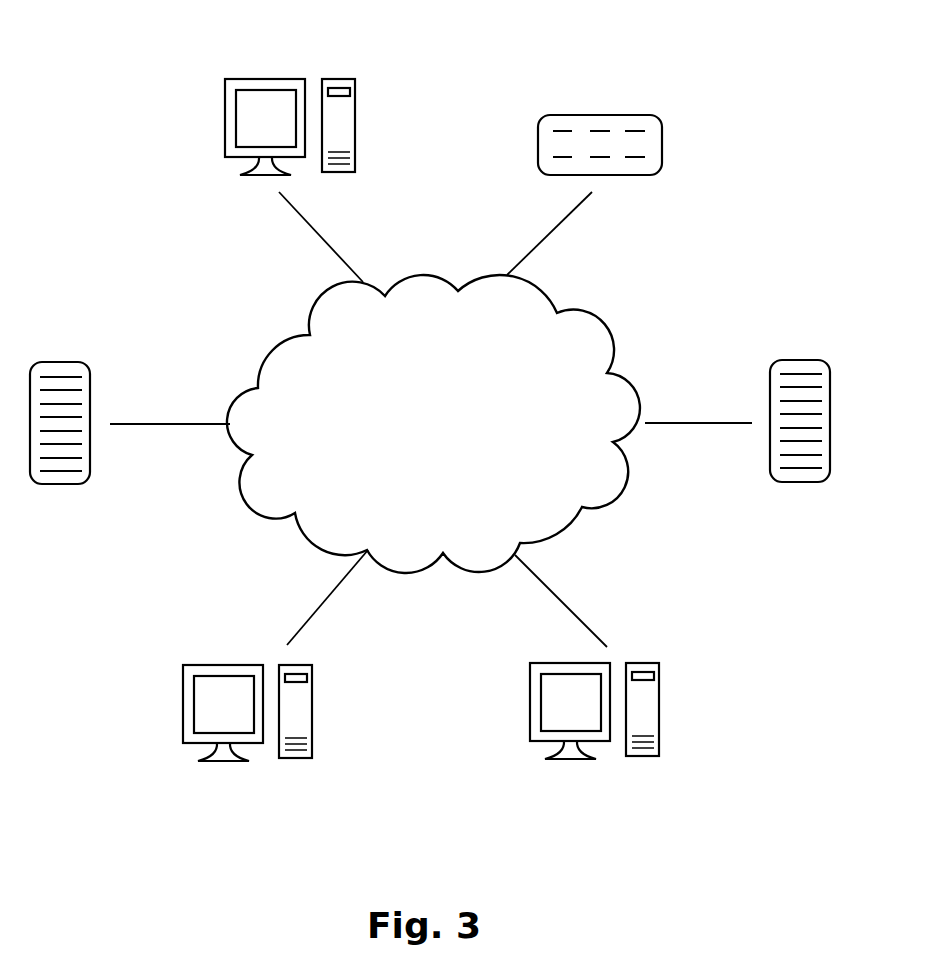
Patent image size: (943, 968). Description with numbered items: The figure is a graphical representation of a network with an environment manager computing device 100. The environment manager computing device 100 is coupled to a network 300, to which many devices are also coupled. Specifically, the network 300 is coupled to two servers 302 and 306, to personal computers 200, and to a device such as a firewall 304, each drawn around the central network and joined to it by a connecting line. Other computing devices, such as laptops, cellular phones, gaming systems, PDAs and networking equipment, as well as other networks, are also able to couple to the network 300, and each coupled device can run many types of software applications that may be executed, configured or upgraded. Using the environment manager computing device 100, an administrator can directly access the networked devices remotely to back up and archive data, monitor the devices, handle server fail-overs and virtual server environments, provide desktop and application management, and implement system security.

The environment manager computing device 100 is at (270, 768).
The personal computers 200 is at (314, 72).
The network 300 is at (251, 501).
The server 302 is at (60, 350).
The firewall 304 is at (601, 108).
The server 306 is at (799, 348).